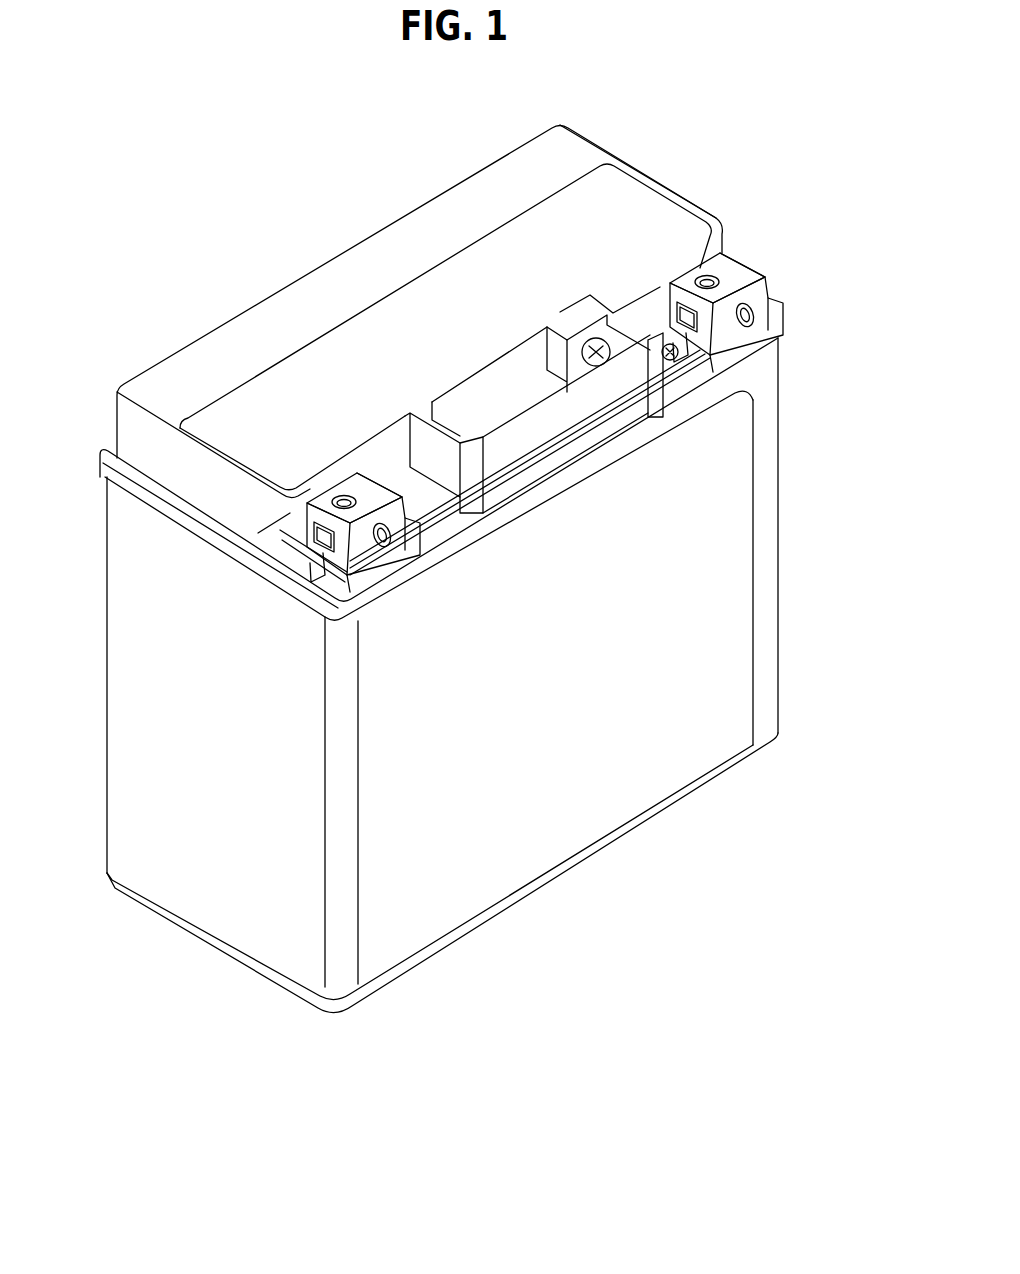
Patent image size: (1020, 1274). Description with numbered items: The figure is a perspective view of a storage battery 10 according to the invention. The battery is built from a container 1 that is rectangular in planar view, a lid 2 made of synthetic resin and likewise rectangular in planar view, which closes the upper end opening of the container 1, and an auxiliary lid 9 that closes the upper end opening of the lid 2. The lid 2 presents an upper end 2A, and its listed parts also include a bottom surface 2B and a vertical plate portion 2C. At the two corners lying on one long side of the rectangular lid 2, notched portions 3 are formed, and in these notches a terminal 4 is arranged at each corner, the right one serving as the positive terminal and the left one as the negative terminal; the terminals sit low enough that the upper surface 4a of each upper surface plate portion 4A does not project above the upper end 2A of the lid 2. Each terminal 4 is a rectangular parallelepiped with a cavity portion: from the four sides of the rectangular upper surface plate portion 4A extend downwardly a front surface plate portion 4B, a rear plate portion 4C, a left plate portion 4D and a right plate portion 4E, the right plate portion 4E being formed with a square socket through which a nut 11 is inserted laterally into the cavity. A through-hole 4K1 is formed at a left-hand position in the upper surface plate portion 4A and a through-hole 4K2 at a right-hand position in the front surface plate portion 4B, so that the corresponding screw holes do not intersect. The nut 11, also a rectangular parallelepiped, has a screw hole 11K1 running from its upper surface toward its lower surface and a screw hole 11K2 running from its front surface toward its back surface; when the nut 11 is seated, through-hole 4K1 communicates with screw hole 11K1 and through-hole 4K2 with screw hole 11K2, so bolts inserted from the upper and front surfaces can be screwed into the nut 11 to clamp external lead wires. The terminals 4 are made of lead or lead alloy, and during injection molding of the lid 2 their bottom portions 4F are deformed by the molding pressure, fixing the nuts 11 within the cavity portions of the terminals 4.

The container 1 is at (580, 802).
The lid 2 is at (128, 430).
The upper end 2A is at (268, 330).
The bottom surface 2B is at (437, 495).
The vertical plate portion 2C is at (190, 473).
The notched portion 3 is at (782, 247).
The terminal 4 is at (747, 296).
The upper surface plate portion 4A is at (740, 265).
The upper surface 4a is at (725, 265).
The front surface plate portion 4B is at (783, 317).
The rear plate portion 4C is at (650, 287).
The left plate portion 4D is at (703, 357).
The right plate portion 4E is at (767, 285).
The bottom portion 4F is at (731, 350).
The through-hole 4K1 is at (700, 270).
The through-hole 4K2 is at (757, 307).
The auxiliary lid 9 is at (600, 200).
The storage battery 10 is at (702, 162).
The nut 11 is at (687, 333).
The screw hole 11K1 is at (667, 300).
The screw hole 11K2 is at (753, 313).